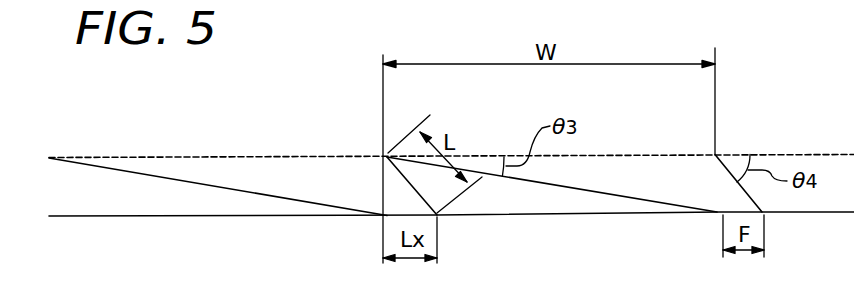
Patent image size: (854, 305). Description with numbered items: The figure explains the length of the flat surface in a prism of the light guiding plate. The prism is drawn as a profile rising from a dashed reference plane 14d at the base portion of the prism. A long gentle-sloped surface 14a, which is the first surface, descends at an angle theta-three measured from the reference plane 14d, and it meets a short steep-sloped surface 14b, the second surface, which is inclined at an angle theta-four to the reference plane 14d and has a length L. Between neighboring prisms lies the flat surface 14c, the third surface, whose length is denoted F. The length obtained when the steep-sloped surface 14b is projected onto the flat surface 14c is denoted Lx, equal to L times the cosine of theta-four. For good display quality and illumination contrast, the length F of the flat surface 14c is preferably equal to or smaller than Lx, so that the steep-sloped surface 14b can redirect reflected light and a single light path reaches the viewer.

The gentle-sloped surface 14a is at (257, 193).
The steep-sloped surface 14b is at (422, 197).
The flat surface 14c is at (422, 217).
The reference plane 14d is at (175, 158).